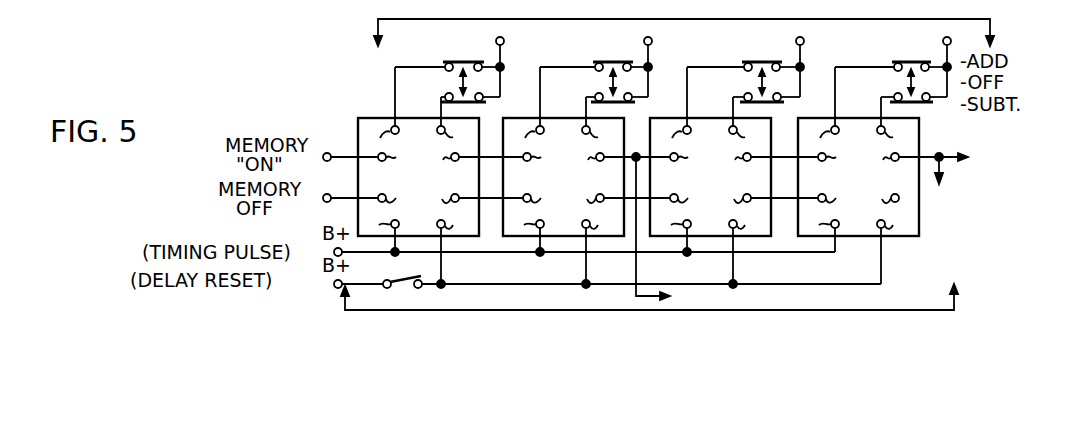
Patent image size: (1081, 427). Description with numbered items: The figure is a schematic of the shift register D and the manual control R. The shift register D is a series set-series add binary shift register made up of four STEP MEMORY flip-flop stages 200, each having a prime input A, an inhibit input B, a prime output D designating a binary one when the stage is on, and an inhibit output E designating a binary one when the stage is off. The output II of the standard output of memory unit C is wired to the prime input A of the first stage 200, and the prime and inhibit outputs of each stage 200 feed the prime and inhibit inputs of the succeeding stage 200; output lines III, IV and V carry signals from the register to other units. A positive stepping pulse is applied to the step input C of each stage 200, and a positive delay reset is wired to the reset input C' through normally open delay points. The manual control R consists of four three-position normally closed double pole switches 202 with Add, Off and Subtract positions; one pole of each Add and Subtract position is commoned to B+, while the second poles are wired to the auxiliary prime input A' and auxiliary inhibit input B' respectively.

The STEP MEMORY flip-flop stage 200 is at (373, 114).
The three position normally closed double pole switch 202 is at (467, 58).
The manual control R is at (692, 17).
The shift register D is at (750, 312).
The output of standard output of memory unit C II is at (350, 148).
The output line III is at (664, 230).
The output IV is at (950, 147).
The output V is at (947, 183).